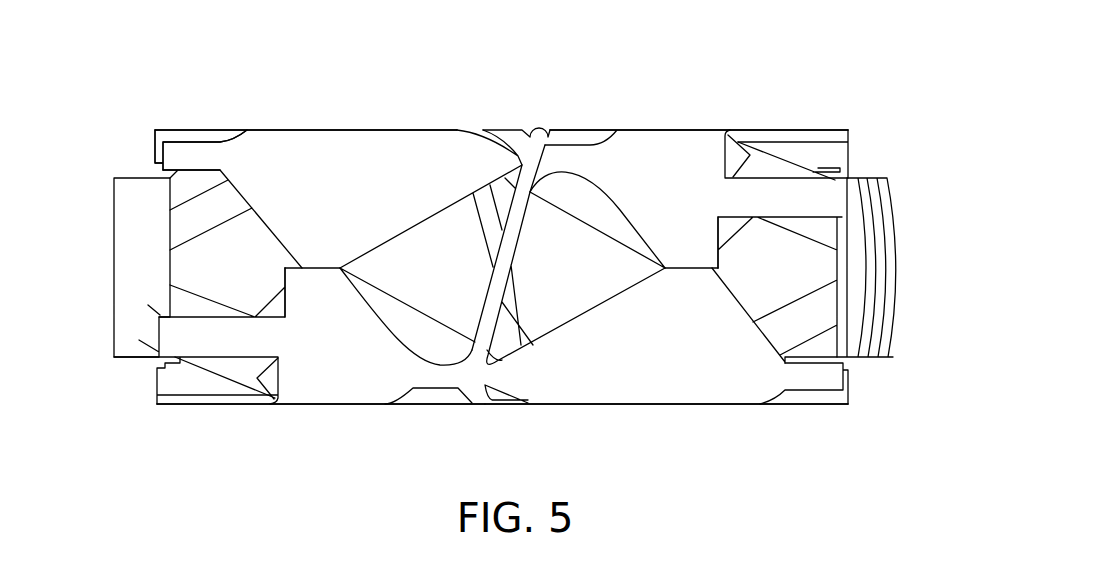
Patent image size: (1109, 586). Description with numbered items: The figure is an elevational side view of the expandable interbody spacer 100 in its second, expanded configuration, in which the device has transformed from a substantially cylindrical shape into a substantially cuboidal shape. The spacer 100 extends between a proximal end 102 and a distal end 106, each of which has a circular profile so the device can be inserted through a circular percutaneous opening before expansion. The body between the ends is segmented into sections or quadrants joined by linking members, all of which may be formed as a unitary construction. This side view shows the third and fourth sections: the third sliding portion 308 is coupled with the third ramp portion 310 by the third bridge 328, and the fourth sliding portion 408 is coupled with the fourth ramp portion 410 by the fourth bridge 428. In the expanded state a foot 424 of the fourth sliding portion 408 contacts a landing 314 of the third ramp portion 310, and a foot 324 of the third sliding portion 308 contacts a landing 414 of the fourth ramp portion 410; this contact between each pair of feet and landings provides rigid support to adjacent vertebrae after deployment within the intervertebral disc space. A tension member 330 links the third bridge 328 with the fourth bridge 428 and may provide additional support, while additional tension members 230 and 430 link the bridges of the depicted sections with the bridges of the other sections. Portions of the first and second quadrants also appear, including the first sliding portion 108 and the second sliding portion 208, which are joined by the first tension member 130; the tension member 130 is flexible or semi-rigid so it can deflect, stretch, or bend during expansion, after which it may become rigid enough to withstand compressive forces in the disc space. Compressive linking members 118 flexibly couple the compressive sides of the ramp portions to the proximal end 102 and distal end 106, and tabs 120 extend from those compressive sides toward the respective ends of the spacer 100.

The expandable interbody spacer 100 is at (717, 41).
The proximal end 102 is at (872, 348).
The distal end 106 is at (132, 190).
The first sliding portion 108 is at (562, 195).
The compressive linking member 118 is at (198, 222).
The tabs 120 is at (170, 137).
The first tension member 130 is at (492, 231).
The second sliding portion 208 is at (437, 332).
The tension member 230 is at (492, 402).
The third sliding portion 308 is at (648, 392).
The third ramp portion 310 is at (320, 390).
The landing 314 is at (333, 260).
The foot 324 is at (688, 260).
The third bridge 328 is at (447, 385).
The tension member 330 is at (503, 258).
The fourth sliding portion 408 is at (313, 142).
The fourth ramp portion 410 is at (650, 142).
The landing 414 is at (681, 278).
The foot 424 is at (309, 278).
The fourth bridge 428 is at (540, 155).
The tension member 430 is at (500, 131).